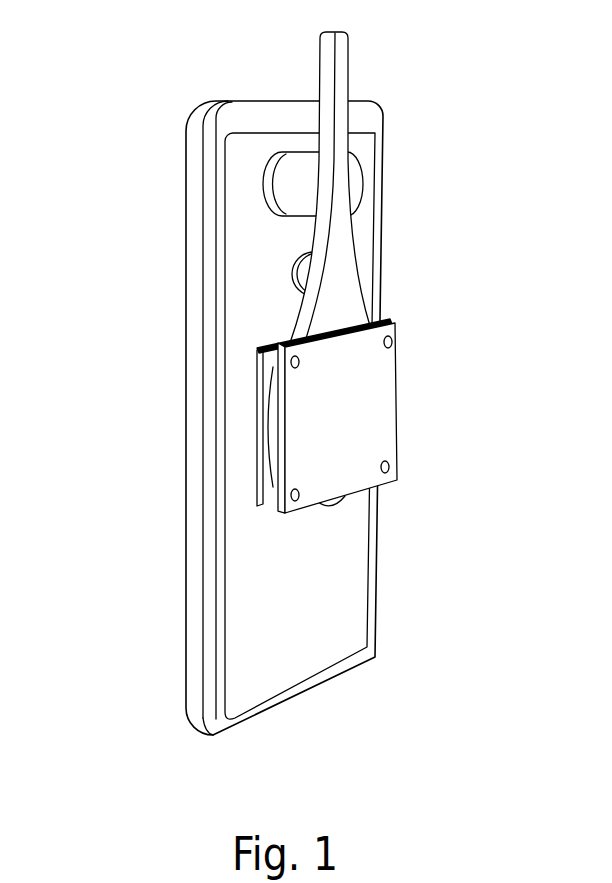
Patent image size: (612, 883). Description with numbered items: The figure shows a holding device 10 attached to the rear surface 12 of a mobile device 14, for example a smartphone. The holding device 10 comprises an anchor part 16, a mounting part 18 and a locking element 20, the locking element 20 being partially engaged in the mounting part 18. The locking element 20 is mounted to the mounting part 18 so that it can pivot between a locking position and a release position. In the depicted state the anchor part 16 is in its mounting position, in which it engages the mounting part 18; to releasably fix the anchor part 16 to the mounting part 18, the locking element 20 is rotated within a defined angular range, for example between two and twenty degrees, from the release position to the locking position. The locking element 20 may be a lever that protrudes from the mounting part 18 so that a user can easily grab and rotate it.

The holding device 10 is at (283, 327).
The rear surface 12 is at (277, 133).
The mobile device 14 is at (368, 150).
The anchor part 16 is at (260, 493).
The mounting part 18 is at (375, 418).
The locking element 20 is at (337, 262).